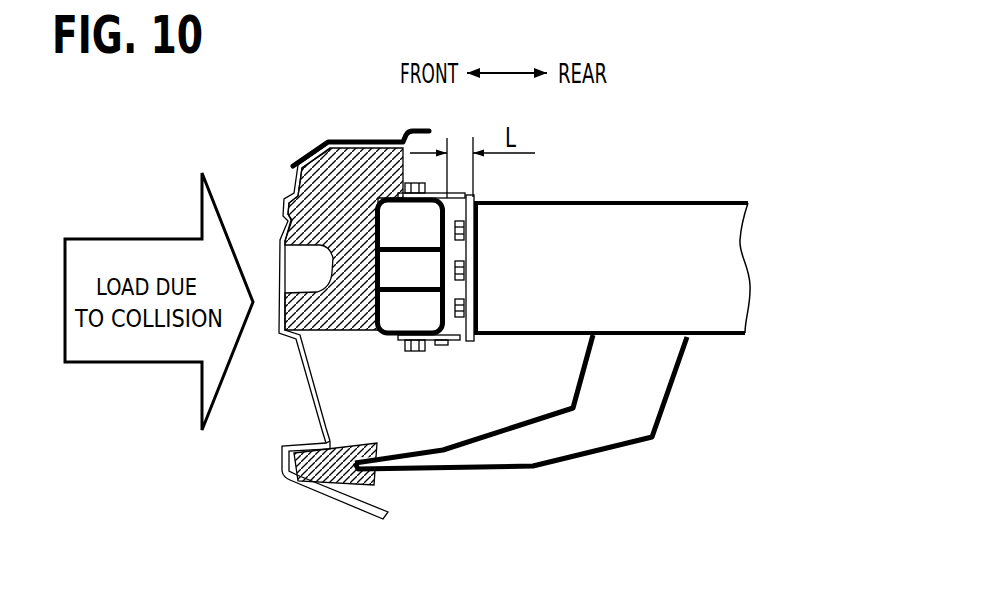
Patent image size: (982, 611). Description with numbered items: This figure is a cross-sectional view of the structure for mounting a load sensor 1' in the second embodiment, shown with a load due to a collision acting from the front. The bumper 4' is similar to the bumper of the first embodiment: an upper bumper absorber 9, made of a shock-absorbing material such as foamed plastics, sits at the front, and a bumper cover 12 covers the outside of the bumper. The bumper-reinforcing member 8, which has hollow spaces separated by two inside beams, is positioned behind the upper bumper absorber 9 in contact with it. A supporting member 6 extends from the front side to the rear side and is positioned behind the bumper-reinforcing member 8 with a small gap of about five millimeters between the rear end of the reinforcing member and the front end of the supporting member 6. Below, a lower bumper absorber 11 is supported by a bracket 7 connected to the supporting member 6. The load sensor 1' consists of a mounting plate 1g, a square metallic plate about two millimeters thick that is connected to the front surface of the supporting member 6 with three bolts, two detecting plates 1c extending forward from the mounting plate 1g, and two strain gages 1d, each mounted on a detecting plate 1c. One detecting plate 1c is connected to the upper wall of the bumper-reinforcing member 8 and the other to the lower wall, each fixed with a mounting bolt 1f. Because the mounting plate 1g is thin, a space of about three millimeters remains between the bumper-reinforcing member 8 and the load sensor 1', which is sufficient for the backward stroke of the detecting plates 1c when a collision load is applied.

The upper bumper absorber 9 is at (353, 192).
The bumper cover 12 is at (295, 177).
The bumper 4' is at (273, 480).
The lower bumper absorber 11 is at (377, 483).
The bracket 7 is at (597, 447).
The supporting member 6 is at (623, 203).
The mounting plate 1g is at (470, 253).
The bumper-reinforcing member 8 is at (382, 337).
The strain gage 1d is at (440, 347).
The mounting bolt 1f is at (417, 353).
The detecting plate 1c is at (457, 343).
The load sensor 1' is at (481, 369).